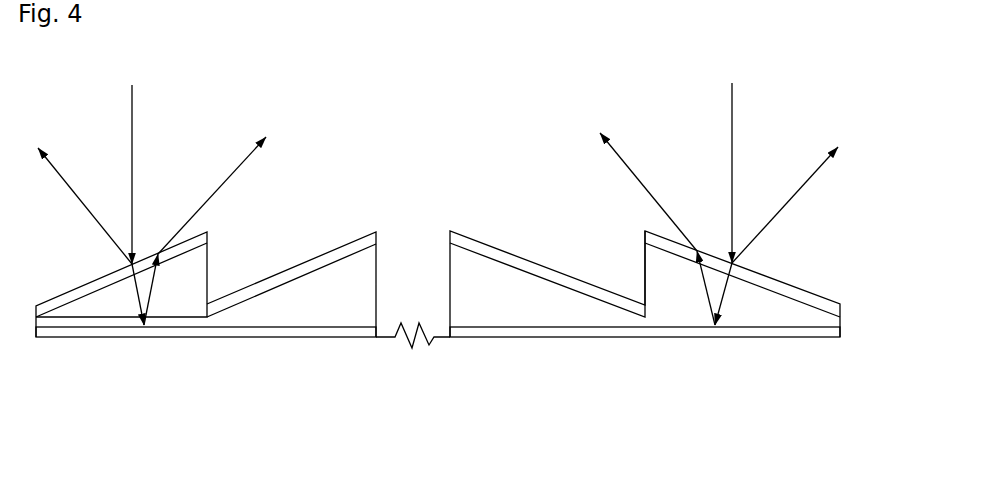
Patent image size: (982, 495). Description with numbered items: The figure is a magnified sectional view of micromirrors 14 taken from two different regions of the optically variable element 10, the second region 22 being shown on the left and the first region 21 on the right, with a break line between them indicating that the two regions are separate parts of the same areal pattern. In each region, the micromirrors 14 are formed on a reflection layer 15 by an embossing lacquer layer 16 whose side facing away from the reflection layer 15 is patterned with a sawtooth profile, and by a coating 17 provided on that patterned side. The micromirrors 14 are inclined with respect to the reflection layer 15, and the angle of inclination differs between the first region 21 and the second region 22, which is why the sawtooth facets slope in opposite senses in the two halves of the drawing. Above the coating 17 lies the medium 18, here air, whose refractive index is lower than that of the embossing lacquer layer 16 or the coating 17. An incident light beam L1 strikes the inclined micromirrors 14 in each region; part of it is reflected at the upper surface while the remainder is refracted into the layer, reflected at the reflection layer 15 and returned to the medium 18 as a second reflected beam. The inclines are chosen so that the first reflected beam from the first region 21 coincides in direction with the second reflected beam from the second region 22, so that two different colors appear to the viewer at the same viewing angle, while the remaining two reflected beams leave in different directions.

The optically variable element 10 is at (387, 338).
The micromirrors 14 is at (107, 271).
The reflection layer 15 is at (224, 332).
The embossing lacquer layer 16 is at (263, 305).
The coating 17 is at (52, 308).
The medium 18 is at (707, 198).
The first region 21 is at (593, 337).
The second region 22 is at (163, 338).
The incident light beam L1 is at (132, 113).